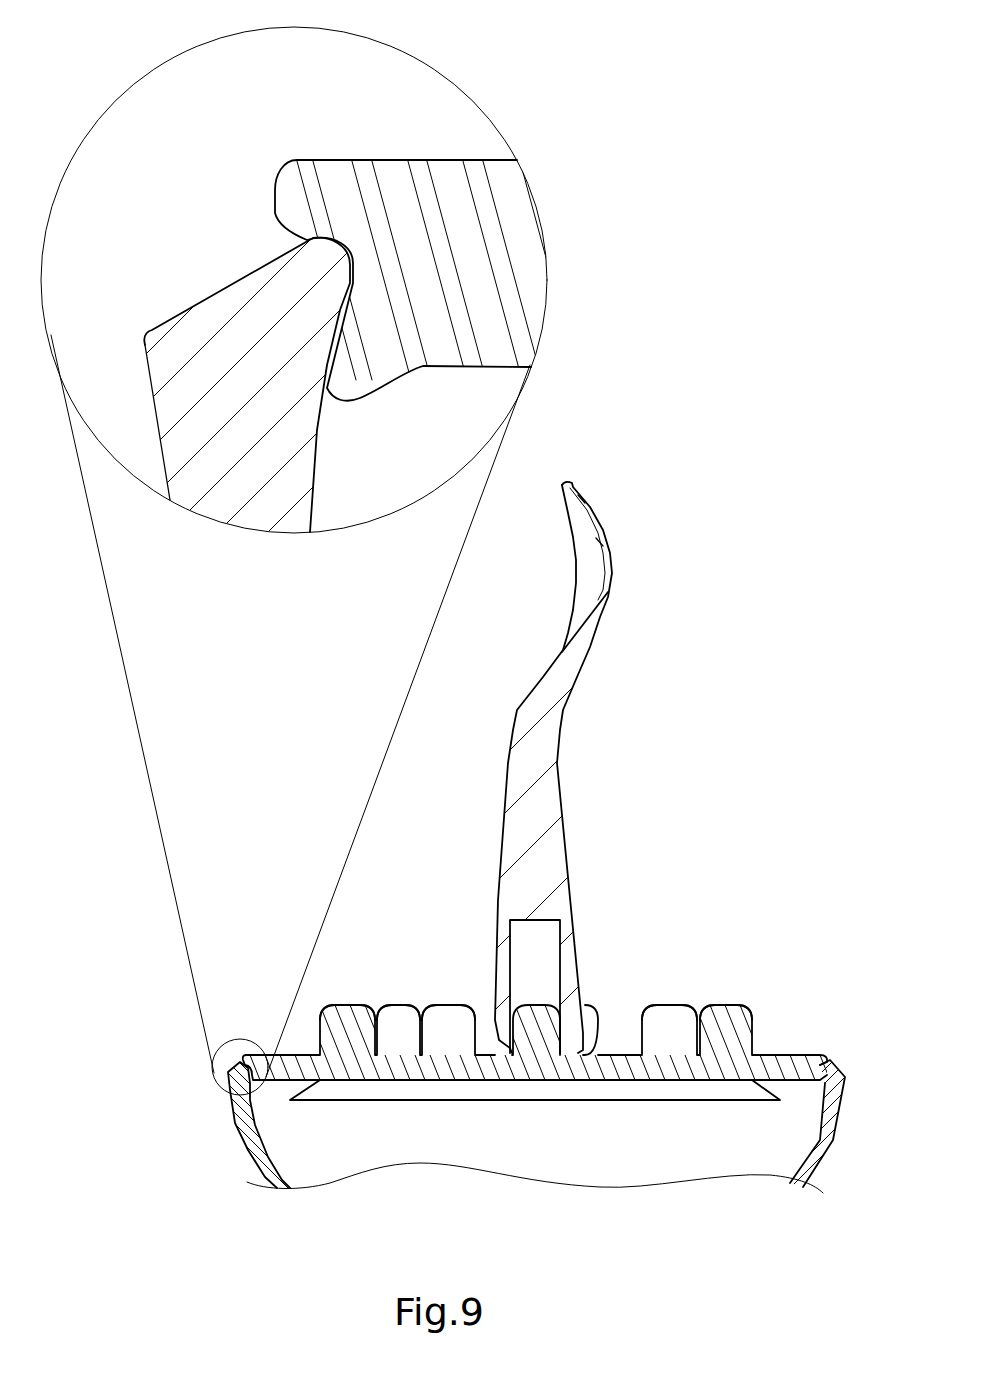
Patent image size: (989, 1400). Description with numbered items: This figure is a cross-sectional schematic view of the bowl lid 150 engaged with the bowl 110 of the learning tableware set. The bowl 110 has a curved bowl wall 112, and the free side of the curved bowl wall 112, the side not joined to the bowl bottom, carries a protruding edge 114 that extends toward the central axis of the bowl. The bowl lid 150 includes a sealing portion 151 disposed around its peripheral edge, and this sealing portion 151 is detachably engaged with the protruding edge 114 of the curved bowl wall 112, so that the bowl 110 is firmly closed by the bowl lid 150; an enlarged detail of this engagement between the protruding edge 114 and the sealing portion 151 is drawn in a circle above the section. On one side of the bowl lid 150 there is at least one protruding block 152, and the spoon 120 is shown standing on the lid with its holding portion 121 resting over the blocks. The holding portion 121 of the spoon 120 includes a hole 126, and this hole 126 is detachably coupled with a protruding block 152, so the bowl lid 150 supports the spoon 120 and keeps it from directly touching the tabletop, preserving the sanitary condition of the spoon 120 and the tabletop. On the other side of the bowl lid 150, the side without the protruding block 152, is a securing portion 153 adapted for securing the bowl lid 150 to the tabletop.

The bowl 110 is at (215, 1172).
The curved bowl wall 112 is at (243, 1135).
The protruding edge 114 is at (197, 337).
The spoon 120 is at (662, 647).
The holding portion 121 is at (545, 818).
The hole 126 is at (547, 948).
The bowl lid 150 is at (732, 975).
The sealing portion 151 is at (430, 213).
The protruding block 152 is at (452, 1010).
The securing portion 153 is at (760, 1083).